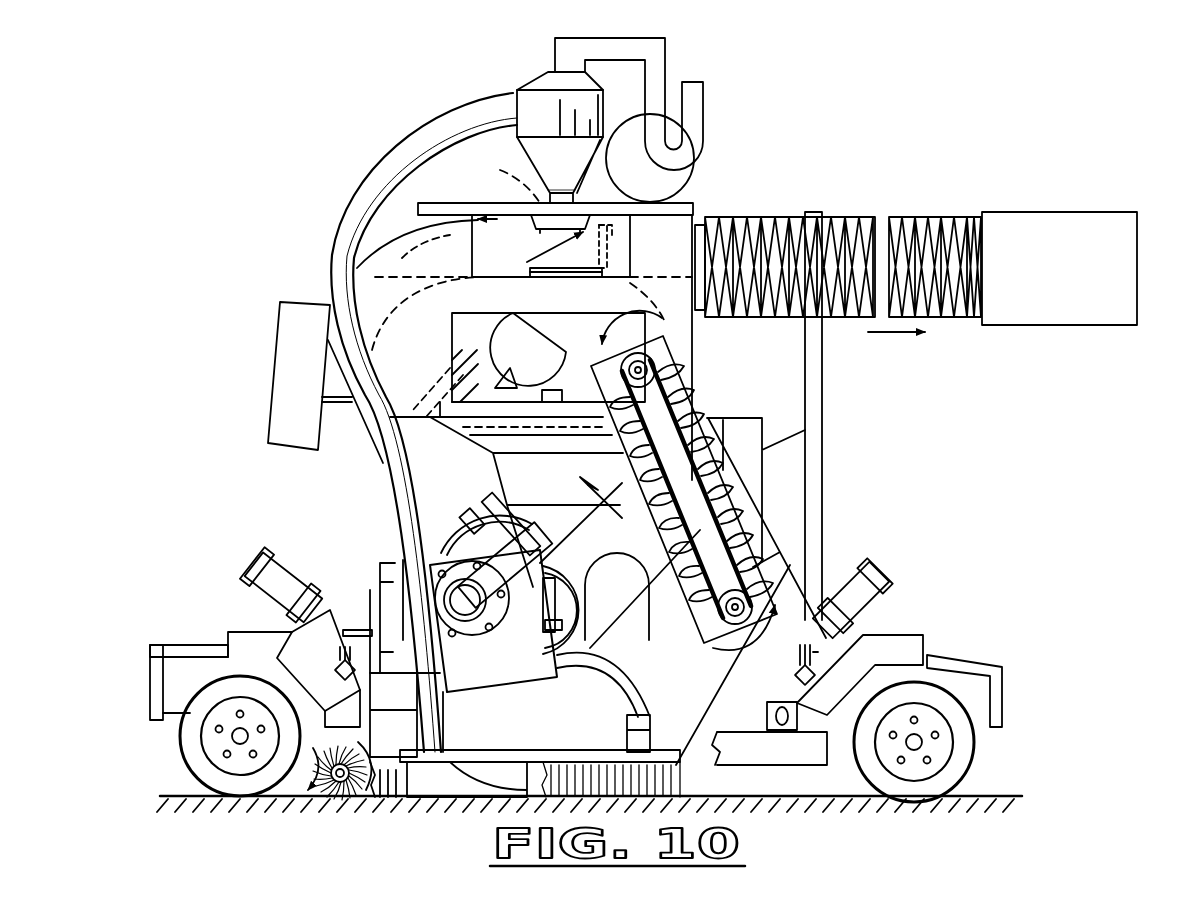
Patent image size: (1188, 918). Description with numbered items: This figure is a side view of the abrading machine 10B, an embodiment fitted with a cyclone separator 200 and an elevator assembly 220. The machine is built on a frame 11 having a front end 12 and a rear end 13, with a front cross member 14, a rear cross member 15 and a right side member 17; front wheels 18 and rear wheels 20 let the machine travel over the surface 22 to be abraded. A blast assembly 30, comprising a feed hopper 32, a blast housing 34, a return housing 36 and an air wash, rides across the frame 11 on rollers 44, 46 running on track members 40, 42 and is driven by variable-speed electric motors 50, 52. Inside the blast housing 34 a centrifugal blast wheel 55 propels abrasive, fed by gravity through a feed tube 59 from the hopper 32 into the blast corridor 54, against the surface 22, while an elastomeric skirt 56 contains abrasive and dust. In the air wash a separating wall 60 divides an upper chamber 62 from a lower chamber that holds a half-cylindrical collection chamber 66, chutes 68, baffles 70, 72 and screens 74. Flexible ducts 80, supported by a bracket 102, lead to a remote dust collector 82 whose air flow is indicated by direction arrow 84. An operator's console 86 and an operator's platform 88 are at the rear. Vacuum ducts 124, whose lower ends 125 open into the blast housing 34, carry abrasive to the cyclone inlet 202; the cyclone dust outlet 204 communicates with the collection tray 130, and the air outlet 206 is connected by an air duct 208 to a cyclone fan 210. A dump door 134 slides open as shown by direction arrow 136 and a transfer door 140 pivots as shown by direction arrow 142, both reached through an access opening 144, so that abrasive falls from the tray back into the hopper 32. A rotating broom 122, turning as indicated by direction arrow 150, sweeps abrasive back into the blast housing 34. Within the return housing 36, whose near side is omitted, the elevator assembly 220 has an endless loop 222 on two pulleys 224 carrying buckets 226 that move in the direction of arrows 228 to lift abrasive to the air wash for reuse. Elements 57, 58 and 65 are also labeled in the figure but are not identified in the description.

The abrading machine 10B is at (232, 240).
The frame 11 is at (180, 648).
The front end 12 is at (1003, 690).
The rear end 13 is at (150, 668).
The front cross member 14 is at (905, 640).
The rear cross member 15 is at (265, 635).
The right side member 17 is at (780, 765).
The front wheels 18 is at (972, 760).
The rear wheels 20 is at (185, 748).
The surface 22 is at (713, 797).
The blast assembly 30 is at (380, 500).
The feed hopper 32 is at (640, 558).
The blast housing 34 is at (522, 740).
The return housing 36 is at (708, 622).
The track member 40 is at (800, 678).
The track member 42 is at (370, 580).
The roller 44 is at (805, 658).
The roller 46 is at (363, 640).
The variable-speed electric motor 50 is at (895, 568).
The variable-speed electric motor 52 is at (258, 560).
The blast corridor 54 is at (478, 680).
The centrifugal blast wheel 55 is at (478, 514).
The elastomeric skirt 56 is at (368, 800).
The impeller 57 is at (612, 600).
The discharge duct 58 is at (612, 688).
The feed tube 59 is at (490, 500).
The separating wall 60 is at (523, 263).
The upper chamber 62 is at (660, 237).
The separator housing 65 is at (522, 356).
The collection chamber 66 is at (528, 336).
The chutes 68 is at (468, 438).
The baffle 70 is at (560, 390).
The baffle 72 is at (518, 382).
The screens 74 is at (432, 380).
The flexible ducts 80 is at (892, 218).
The remote dust collector 82 is at (1030, 212).
The direction arrow 84 is at (890, 335).
The operator's console 86 is at (268, 363).
The operator's platform 88 is at (118, 627).
The bracket 102 is at (815, 212).
The rotating broom 122 is at (330, 800).
The vacuum ducts 124 is at (357, 195).
The lower ends 125 is at (440, 797).
The collection tray 130 is at (520, 193).
The dump door 134 is at (555, 230).
The direction arrow 136 is at (480, 223).
The transfer door 140 is at (560, 278).
The direction arrow 142 is at (550, 242).
The access opening 144 is at (630, 258).
The direction arrow 150 is at (292, 800).
The cyclone separator 200 is at (505, 126).
The cyclone inlet 202 is at (517, 108).
The cyclone dust outlet 204 is at (548, 190).
The air outlet 206 is at (615, 102).
The air duct 208 is at (667, 63).
The cyclone fan 210 is at (683, 140).
The elevator assembly 220 is at (727, 468).
The endless loop 222 is at (715, 420).
The pulleys 224 is at (665, 360).
The bucket 226 is at (590, 492).
The direction arrows 228 is at (650, 325).